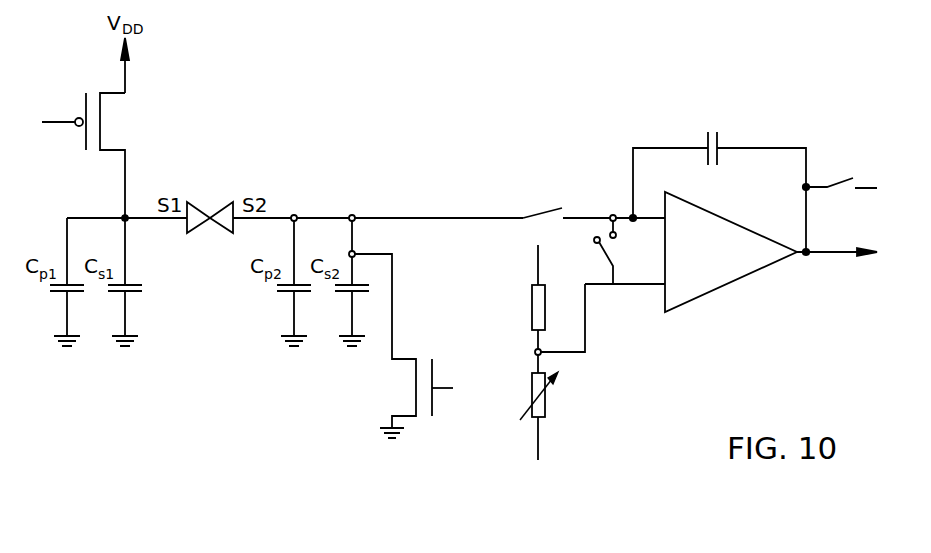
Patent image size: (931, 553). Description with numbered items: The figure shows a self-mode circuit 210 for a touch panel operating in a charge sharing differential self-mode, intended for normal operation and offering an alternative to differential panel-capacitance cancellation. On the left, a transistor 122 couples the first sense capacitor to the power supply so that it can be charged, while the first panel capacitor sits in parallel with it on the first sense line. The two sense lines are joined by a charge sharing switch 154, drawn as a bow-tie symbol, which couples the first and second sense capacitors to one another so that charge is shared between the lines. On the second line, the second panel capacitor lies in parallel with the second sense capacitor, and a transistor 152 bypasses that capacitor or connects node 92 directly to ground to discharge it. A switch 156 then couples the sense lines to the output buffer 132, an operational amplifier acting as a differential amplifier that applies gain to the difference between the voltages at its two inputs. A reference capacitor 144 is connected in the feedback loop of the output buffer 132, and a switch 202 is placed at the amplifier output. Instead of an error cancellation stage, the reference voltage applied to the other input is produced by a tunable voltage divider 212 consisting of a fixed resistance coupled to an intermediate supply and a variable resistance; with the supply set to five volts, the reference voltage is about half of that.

The transistor 122 is at (118, 92).
The node 92 is at (128, 216).
The charge sharing switch 154 is at (211, 214).
The transistor 152 is at (403, 417).
The switch 156 is at (550, 207).
The tunable voltage divider 212 is at (583, 400).
The output buffer 132 is at (747, 273).
The reference capacitor 144 is at (720, 160).
The switch 202 is at (842, 183).
The self-mode circuit 210 is at (700, 250).